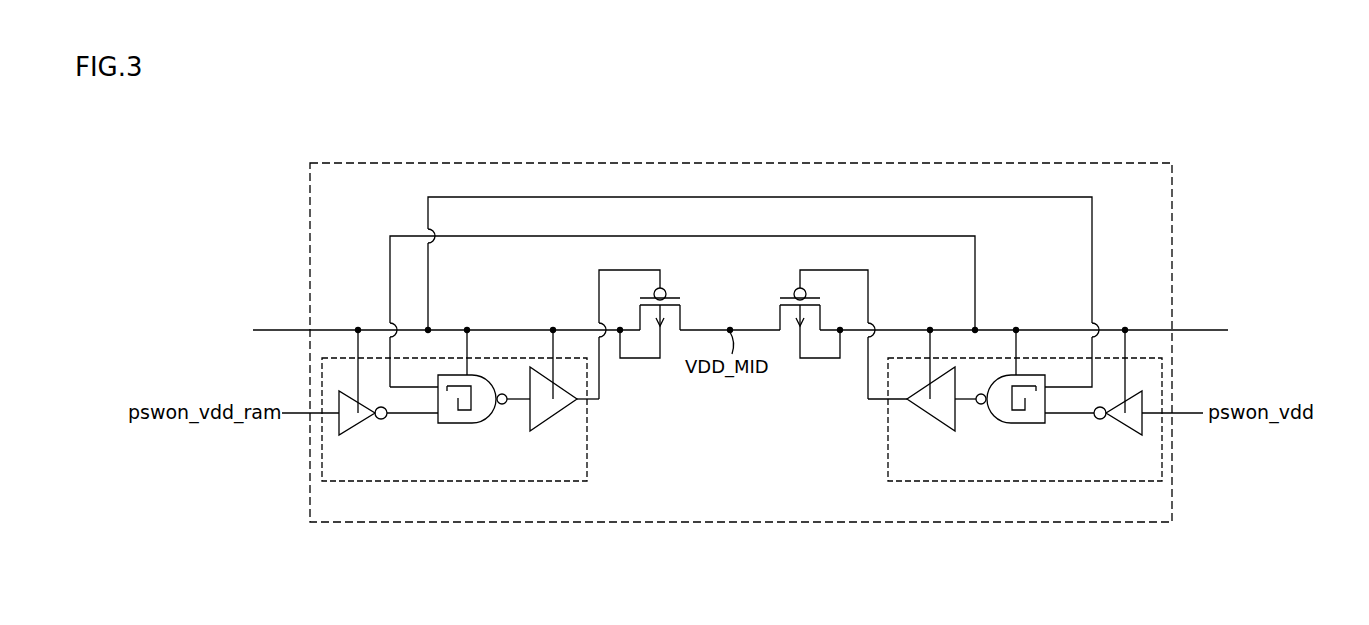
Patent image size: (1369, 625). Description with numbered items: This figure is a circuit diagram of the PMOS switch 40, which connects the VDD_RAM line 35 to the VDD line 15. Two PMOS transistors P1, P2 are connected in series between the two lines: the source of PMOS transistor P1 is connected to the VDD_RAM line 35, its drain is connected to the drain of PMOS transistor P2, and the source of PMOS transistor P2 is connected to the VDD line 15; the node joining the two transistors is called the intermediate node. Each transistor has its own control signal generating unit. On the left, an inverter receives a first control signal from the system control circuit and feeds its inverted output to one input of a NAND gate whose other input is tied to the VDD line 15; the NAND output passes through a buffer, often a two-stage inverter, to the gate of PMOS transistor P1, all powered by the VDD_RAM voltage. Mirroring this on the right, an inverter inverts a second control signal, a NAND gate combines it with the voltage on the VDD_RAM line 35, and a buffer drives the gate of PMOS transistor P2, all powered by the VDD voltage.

The PMOS switch 40 is at (1088, 163).
The VDD_RAM line 35 is at (286, 330).
The VDD line 15 is at (1198, 330).
The PMOS transistor P1 is at (667, 295).
The PMOS transistor P2 is at (793, 295).